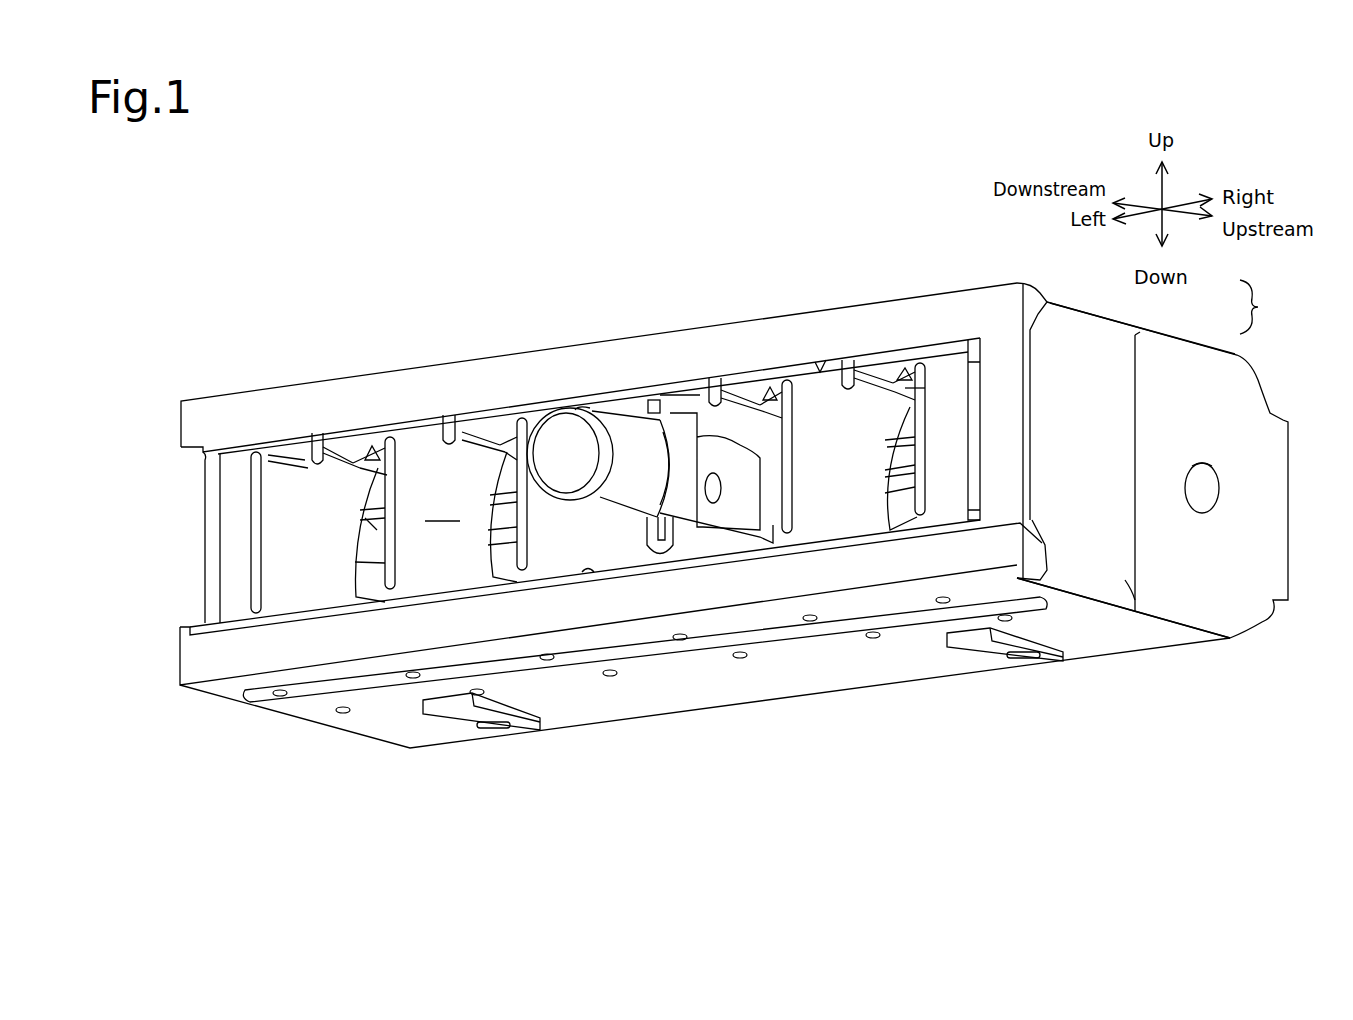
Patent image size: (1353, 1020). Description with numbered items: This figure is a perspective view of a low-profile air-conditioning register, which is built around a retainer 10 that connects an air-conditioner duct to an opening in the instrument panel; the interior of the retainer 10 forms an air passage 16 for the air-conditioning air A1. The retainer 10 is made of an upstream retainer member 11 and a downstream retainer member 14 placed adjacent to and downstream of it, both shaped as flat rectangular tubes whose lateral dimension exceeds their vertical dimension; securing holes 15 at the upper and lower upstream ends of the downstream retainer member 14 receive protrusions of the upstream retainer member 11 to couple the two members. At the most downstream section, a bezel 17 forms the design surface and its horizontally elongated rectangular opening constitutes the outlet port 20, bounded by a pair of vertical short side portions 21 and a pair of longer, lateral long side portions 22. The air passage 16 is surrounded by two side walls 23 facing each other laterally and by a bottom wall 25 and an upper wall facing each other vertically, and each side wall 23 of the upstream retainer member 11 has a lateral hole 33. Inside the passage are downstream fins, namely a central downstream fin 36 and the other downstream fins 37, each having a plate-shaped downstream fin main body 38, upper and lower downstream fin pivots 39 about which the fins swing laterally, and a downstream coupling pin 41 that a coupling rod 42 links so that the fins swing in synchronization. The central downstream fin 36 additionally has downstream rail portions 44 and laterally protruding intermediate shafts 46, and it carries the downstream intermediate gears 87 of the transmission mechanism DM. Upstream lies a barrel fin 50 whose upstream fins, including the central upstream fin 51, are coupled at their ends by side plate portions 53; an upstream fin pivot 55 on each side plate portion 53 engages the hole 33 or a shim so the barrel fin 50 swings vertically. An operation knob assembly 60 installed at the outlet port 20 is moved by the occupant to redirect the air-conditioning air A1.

The retainer 10 is at (1263, 307).
The upstream retainer member 11 is at (1187, 355).
The downstream retainer member 14 is at (1117, 330).
The securing hole 15 is at (495, 728).
The air passage 16 is at (442, 507).
The bezel 17 is at (980, 302).
The outlet port 20 is at (807, 262).
The short side portion 21 is at (220, 520).
The long side portion 22 is at (588, 572).
The side wall 23 is at (228, 470).
The bottom wall 25 is at (1077, 615).
The hole 33 is at (1200, 465).
The downstream fin 36 is at (680, 388).
The downstream fin 37 is at (561, 435).
The downstream fin main body 38 is at (276, 450).
The downstream fin pivot 39 is at (318, 433).
The downstream coupling pin 41 is at (372, 446).
The coupling rod 42 is at (910, 388).
The downstream rail portion 44 is at (662, 566).
The intermediate shaft 46 is at (722, 489).
The barrel fin 50 is at (321, 565).
The upstream fin 51 is at (357, 533).
The side plate portion 53 is at (365, 498).
The upstream fin pivot 55 is at (1214, 488).
The operation knob assembly 60 is at (588, 507).
The downstream intermediate gear 87 is at (766, 545).
The transmission mechanism DM is at (721, 550).
The air-conditioning air A1 is at (845, 711).